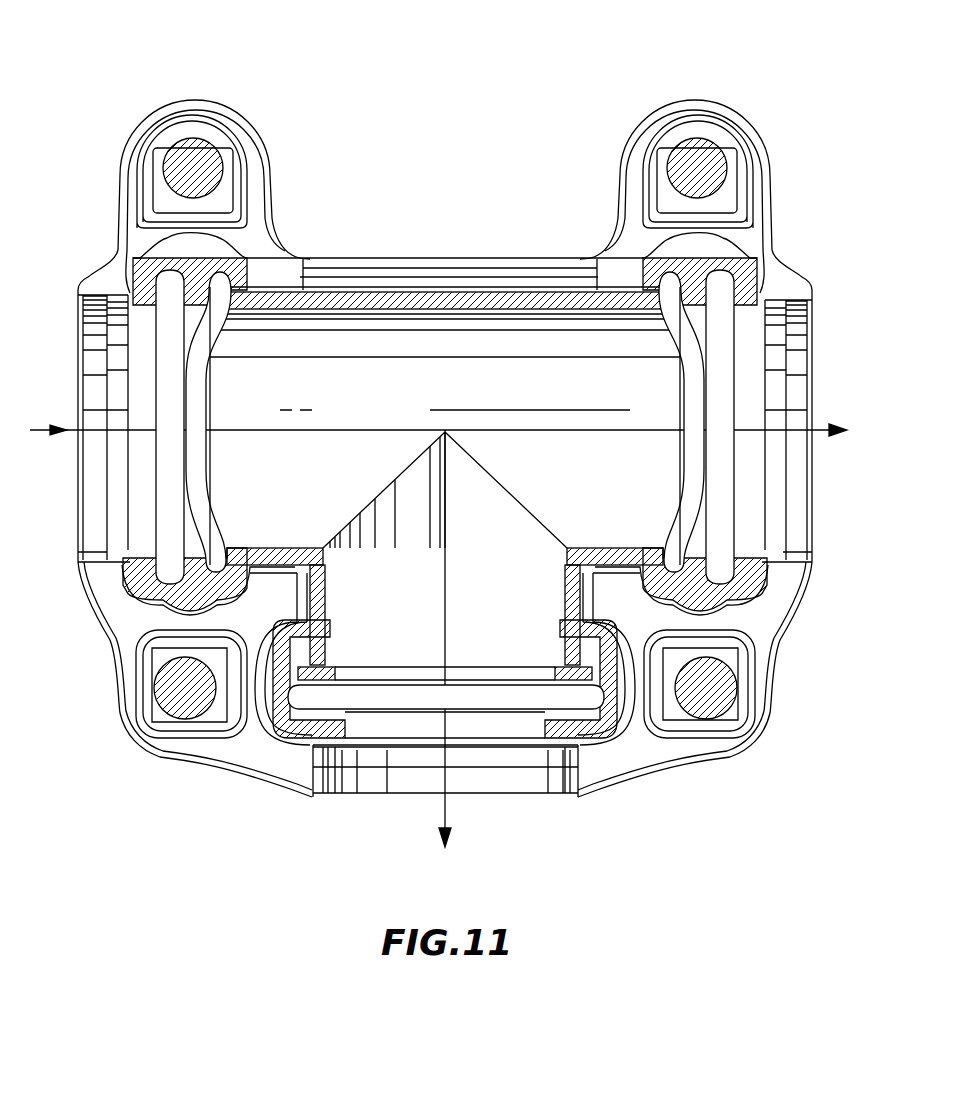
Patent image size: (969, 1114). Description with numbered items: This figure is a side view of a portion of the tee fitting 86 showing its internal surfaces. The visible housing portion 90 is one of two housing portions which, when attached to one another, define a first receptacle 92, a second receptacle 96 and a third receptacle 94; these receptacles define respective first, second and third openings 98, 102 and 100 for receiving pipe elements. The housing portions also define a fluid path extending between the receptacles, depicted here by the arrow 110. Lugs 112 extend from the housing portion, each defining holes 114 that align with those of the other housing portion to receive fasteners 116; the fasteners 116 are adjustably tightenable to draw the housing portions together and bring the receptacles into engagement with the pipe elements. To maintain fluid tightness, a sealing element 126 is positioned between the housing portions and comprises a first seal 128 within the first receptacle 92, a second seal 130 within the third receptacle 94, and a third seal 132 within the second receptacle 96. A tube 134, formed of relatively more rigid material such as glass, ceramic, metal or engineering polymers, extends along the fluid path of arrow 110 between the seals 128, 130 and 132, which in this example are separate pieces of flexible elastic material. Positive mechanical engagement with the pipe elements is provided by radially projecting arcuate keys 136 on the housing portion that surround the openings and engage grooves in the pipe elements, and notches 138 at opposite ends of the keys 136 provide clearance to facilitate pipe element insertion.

The tee fitting 86 is at (663, 82).
The sealing element 126 is at (342, 160).
The first seal 128 is at (762, 282).
The second housing portion 90 is at (367, 272).
The tube 134 is at (437, 298).
The arrow 110 is at (378, 428).
The third receptacle 94 is at (77, 552).
The notches 138 is at (773, 615).
The second seal 130 is at (135, 282).
The third opening 100 is at (103, 450).
The first receptacle 92 is at (813, 328).
The first opening 98 is at (800, 391).
The arcuate keys 136 is at (92, 518).
The fasteners 116 is at (712, 684).
The holes 114 is at (683, 718).
The lugs 112 is at (747, 737).
The third seal 132 is at (290, 745).
The second opening 102 is at (373, 782).
The second receptacle 96 is at (558, 795).